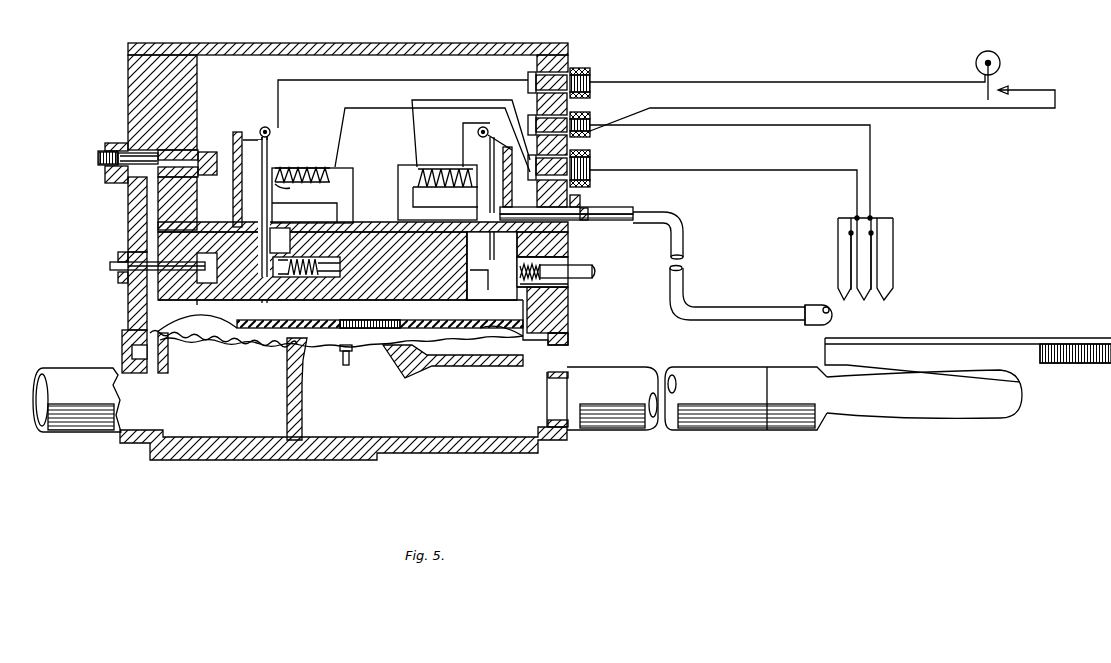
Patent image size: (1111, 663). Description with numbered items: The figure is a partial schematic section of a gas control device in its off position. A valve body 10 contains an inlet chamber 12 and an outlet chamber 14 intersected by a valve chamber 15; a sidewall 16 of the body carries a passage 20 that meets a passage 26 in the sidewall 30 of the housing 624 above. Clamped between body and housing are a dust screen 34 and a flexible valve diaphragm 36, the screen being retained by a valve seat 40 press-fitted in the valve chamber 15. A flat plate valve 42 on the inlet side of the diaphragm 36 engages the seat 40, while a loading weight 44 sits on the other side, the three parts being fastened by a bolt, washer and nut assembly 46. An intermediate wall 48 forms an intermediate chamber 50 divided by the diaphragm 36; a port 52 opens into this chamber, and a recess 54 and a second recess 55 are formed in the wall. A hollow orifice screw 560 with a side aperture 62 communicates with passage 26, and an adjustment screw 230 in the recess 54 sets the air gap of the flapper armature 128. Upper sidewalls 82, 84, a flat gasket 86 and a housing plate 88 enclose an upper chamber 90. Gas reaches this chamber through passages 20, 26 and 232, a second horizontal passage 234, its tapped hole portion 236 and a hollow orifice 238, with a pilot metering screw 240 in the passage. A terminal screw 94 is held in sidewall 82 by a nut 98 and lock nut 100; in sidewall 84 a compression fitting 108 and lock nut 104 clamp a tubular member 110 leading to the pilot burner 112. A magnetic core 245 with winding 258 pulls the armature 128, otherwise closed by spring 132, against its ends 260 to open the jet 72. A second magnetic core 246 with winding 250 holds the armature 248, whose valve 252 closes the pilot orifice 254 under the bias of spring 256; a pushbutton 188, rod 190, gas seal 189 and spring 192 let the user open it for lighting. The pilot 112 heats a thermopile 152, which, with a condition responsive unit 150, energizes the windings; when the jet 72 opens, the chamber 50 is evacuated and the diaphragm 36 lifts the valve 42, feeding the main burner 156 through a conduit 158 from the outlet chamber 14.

The valve body 10 is at (452, 462).
The inlet chamber 12 is at (216, 413).
The outlet chamber 14 is at (526, 407).
The valve chamber 15 is at (353, 408).
The sidewall 16 is at (126, 353).
The passage 20 is at (168, 353).
The passage 26 is at (158, 298).
The sidewall 30 is at (128, 312).
The dust screen 34 is at (270, 348).
The valve diaphragm 36 is at (510, 330).
The valve seat 40 is at (300, 360).
The flat plate valve 42 is at (395, 336).
The loading weight 44 is at (290, 326).
The bolt, washer and nut assembly 46 is at (346, 365).
The intermediate wall 48 is at (395, 302).
The intermediate chamber 50 is at (453, 318).
The port 52 is at (205, 302).
The recess 54 is at (363, 218).
The second recess 55 is at (488, 272).
The side aperture 62 is at (118, 268).
The jet 72 is at (258, 302).
The sidewall 82 is at (128, 218).
The sidewall 84 is at (568, 240).
The flat gasket 86 is at (568, 56).
The housing plate 88 is at (518, 43).
The upper chamber 90 is at (232, 77).
The terminal screw 94 is at (590, 107).
The nut 98 is at (578, 68).
The lock nut 100 is at (590, 70).
The lock nut 104 is at (608, 208).
The compression fitting 108 is at (580, 198).
The tubular member 110 is at (684, 240).
The pilot burner 112 is at (820, 305).
The flapper armature 128 is at (270, 140).
The spring 132 is at (233, 190).
The condition responsive unit 150 is at (1033, 71).
The thermopile 152 is at (921, 277).
The main burner 156 is at (1012, 327).
The conduit 158 is at (692, 432).
The pushbutton 188 is at (590, 268).
The gas seal 189 is at (493, 320).
The rod 190 is at (560, 281).
The spring 192 is at (545, 290).
The adjustment screw 230 is at (301, 271).
The passage 232 is at (145, 183).
The second horizontal passage 234 is at (140, 150).
The tapped hole portion 236 is at (175, 150).
The hollow orifice 238 is at (192, 152).
The pilot metering screw 240 is at (98, 160).
The magnetic core 245 is at (312, 195).
The second magnetic core 246 is at (408, 212).
The armature 248 is at (490, 255).
The winding 250 is at (418, 188).
The valve 252 is at (490, 243).
The orifice 254 is at (490, 208).
The spring 256 is at (478, 160).
The winding 258 is at (328, 168).
The ends 260 is at (280, 186).
The hollow orifice screw 560 is at (118, 256).
The housing 624 is at (128, 78).